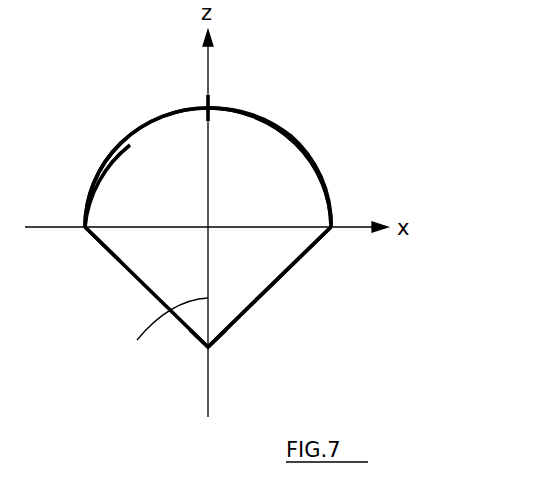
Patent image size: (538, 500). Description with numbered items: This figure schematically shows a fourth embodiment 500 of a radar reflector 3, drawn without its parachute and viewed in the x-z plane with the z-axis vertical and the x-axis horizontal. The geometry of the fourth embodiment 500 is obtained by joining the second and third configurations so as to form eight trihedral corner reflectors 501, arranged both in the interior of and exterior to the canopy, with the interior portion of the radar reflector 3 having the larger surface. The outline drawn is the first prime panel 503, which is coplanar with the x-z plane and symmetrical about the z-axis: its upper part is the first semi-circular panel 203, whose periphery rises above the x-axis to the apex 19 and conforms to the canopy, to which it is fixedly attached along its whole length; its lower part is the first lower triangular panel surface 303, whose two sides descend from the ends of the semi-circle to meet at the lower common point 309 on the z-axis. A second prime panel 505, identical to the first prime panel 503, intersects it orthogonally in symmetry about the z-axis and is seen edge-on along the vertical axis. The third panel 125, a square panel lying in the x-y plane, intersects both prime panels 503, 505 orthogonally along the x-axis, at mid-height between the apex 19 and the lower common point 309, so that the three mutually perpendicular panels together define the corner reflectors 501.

The radar reflector 3 is at (124, 108).
The apex 19 is at (208, 100).
The third panel 125 is at (103, 244).
The first semi-circular panel 203 is at (250, 135).
The first lower triangular panel surface 303 is at (273, 262).
The lower common point 309 is at (211, 349).
The fourth embodiment 500 is at (352, 117).
The trihedral corner reflectors 501 is at (345, 175).
The first prime panel 503 is at (107, 194).
The second prime panel 505 is at (162, 337).